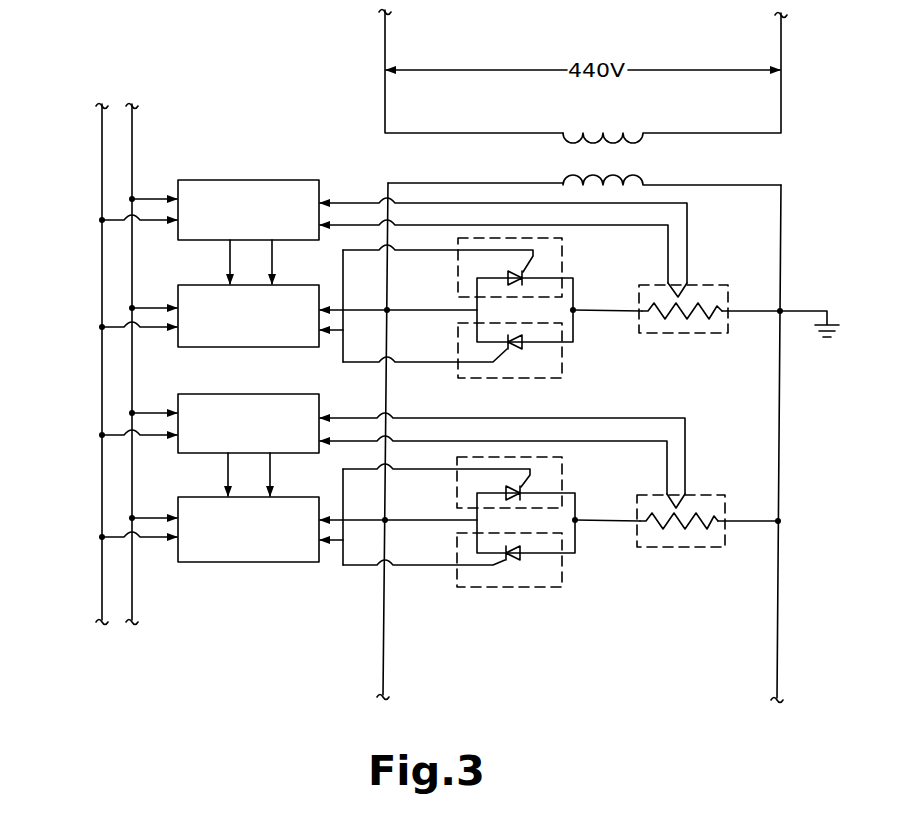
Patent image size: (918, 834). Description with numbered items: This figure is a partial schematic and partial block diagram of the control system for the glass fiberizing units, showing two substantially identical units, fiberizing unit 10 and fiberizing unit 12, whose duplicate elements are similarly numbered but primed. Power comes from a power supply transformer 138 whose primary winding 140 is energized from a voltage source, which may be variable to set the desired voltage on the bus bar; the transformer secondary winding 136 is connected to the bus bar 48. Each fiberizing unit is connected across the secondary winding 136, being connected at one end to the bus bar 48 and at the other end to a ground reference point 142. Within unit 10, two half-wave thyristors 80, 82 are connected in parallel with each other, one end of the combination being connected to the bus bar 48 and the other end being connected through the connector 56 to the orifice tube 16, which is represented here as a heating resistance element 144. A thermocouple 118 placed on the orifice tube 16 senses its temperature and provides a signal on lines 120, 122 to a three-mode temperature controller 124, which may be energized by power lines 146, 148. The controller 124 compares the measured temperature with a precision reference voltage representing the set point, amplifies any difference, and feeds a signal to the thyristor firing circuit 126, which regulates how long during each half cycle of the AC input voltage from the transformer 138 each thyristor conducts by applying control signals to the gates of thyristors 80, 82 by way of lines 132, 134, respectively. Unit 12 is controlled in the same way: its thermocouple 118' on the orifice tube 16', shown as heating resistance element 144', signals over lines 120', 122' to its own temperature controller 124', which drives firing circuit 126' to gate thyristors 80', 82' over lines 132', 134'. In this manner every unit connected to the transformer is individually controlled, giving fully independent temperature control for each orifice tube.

The fiberizing unit 10 is at (702, 311).
The fiberizing unit 12 is at (697, 524).
The orifice tube 16 is at (695, 323).
The orifice tube 16' is at (694, 535).
The bus bar 48 is at (384, 660).
The connector 56 is at (626, 314).
The thyristor 80 is at (532, 267).
The thyristor 80' is at (534, 482).
The thyristor 82 is at (532, 356).
The thyristor 82' is at (538, 570).
The thermocouple 118 is at (702, 278).
The thermocouple 118' is at (704, 490).
The thermocouple output line 120 is at (494, 251).
The thermocouple output line 120' is at (493, 465).
The thermocouple output line 122 is at (533, 240).
The thermocouple output line 122' is at (536, 453).
The temperature controller 124 is at (248, 218).
The temperature controller 124' is at (248, 431).
The thyristor firing circuit 126 is at (234, 303).
The thyristor firing circuit 126' is at (233, 515).
The gate line 132 is at (426, 303).
The gate line 132' is at (425, 514).
The gate line 134 is at (425, 345).
The gate line 134' is at (424, 551).
The secondary winding 136 is at (562, 178).
The power supply transformer 138 is at (646, 158).
The primary winding 140 is at (563, 138).
The ground reference point 142 is at (777, 677).
The heating resistance element 144 is at (676, 331).
The heating resistance element 144' is at (671, 541).
The power line 146 is at (102, 122).
The power line 148 is at (132, 128).